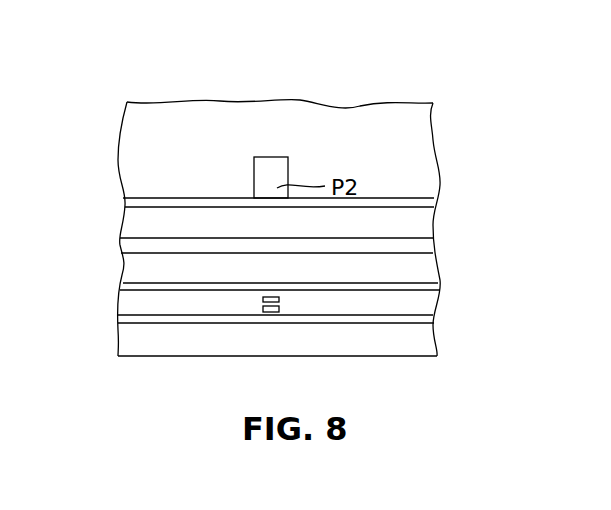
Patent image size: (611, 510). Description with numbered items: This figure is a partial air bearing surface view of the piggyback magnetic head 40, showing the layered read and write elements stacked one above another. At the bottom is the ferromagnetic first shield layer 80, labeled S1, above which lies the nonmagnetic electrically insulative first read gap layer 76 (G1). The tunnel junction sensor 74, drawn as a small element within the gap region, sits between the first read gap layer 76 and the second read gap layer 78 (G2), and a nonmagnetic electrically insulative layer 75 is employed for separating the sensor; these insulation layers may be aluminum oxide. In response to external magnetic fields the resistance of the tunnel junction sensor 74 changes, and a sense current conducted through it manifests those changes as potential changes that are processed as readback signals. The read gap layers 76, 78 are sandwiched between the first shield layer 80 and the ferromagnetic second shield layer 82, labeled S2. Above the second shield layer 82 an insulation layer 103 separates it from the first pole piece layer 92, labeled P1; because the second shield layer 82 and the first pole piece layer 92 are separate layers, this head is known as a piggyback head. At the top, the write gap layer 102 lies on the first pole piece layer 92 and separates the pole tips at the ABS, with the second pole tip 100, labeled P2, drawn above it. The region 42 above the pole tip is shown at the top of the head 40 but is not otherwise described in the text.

The piggyback magnetic head 40 is at (455, 117).
The top layer / gap 42 is at (127, 130).
The second pole tip 100 is at (270, 165).
The write gap layer 102 is at (192, 198).
The first pole piece layer 92 is at (126, 223).
The insulation layer 103 is at (427, 249).
The second shield layer 82 is at (125, 272).
The nonmagnetic electrically insulative layer 75 is at (427, 305).
The second read gap layer 78 is at (383, 290).
The tunnel junction sensor 74 is at (257, 304).
The first read gap layer 76 is at (162, 322).
The first shield layer 80 is at (427, 339).